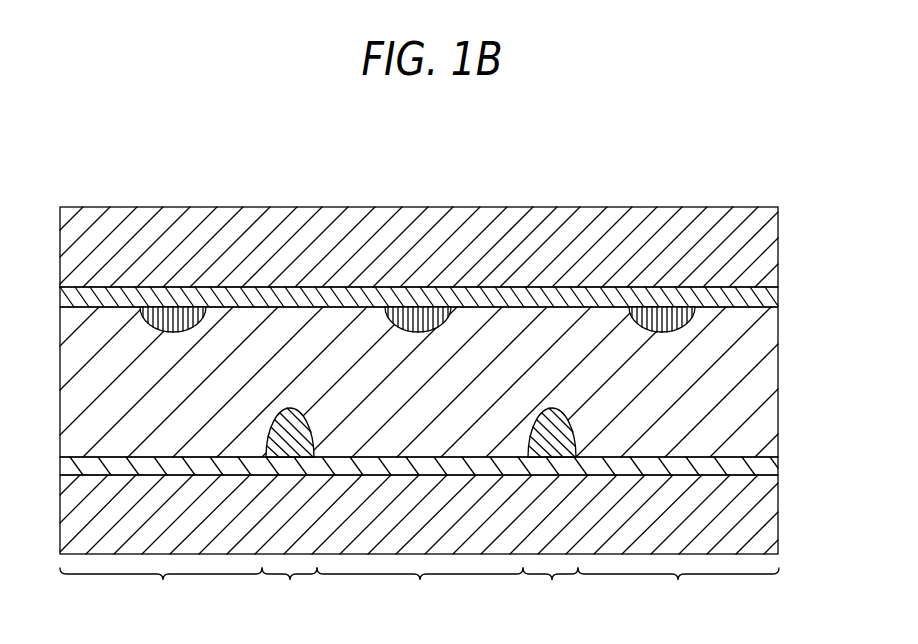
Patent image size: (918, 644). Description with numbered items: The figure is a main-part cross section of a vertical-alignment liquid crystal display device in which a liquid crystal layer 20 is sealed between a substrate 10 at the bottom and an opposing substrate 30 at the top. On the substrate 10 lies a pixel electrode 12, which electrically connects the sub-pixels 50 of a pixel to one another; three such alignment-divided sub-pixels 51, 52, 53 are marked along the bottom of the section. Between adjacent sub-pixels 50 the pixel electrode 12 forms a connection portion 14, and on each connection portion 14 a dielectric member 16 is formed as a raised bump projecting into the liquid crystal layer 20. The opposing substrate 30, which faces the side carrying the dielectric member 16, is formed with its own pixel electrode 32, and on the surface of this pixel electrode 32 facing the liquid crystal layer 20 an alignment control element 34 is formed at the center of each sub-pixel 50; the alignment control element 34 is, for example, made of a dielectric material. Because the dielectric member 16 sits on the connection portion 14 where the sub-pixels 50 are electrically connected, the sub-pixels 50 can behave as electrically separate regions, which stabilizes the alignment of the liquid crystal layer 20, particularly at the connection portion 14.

The substrate 10 is at (779, 508).
The pixel electrode 12 is at (779, 462).
The connection portion 14 is at (420, 590).
The dielectric member 16 is at (268, 441).
The liquid crystal layer 20 is at (779, 380).
The opposing substrate 30 is at (779, 247).
The pixel electrode 32 is at (779, 295).
The alignment control element 34 is at (663, 307).
The sub-pixel 50 is at (419, 590).
The sub-pixel 51 is at (161, 590).
The sub-pixel 52 is at (420, 590).
The sub-pixel 53 is at (678, 590).